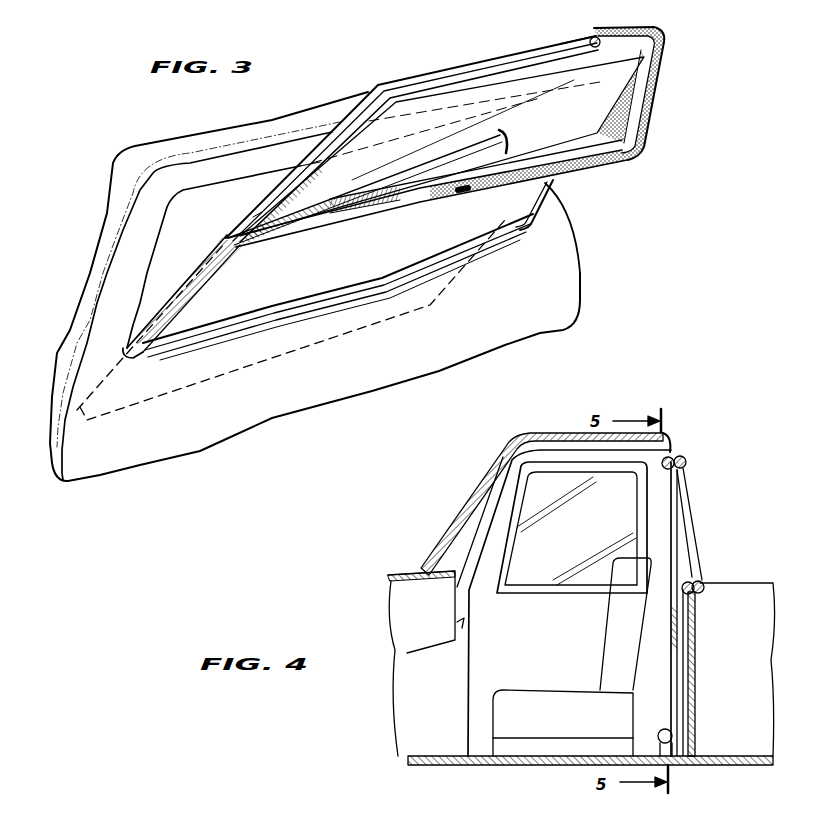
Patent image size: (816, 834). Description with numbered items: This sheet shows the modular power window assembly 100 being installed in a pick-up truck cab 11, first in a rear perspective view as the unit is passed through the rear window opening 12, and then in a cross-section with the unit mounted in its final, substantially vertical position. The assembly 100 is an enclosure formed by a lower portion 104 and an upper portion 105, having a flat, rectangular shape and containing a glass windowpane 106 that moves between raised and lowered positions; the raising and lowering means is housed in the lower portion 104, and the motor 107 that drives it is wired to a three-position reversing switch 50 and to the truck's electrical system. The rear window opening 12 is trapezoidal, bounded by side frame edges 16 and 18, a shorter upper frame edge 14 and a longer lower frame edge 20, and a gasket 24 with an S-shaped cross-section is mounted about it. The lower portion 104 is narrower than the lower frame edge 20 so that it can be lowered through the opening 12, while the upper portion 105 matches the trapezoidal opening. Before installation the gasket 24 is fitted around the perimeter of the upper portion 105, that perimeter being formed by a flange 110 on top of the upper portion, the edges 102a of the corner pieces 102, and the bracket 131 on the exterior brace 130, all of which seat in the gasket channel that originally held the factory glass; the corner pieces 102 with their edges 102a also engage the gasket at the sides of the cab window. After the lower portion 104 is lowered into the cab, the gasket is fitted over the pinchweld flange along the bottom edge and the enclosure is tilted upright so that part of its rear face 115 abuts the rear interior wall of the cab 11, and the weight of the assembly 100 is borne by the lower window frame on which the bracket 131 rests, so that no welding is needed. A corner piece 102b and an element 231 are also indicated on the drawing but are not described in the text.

In FIG. 3, the truck cab 11 is at (163, 147).
In FIG. 4, the truck cab 11 is at (543, 433).
In FIG. 3, the rear window opening 12 is at (183, 247).
In FIG. 3, the upper frame edge 14 is at (258, 182).
In FIG. 3, the side frame edge 16 is at (143, 305).
In FIG. 3, the side frame edge 18 is at (544, 212).
In FIG. 3, the lower frame edge 20 is at (413, 267).
In FIG. 3, the gasket 24 is at (607, 160).
In FIG. 4, the gasket 24 is at (680, 458).
In FIG. 4, the reversing switch 50 is at (457, 626).
In FIG. 4, the modular power window assembly 100 is at (652, 600).
In FIG. 3, the corner piece 102 is at (627, 127).
In FIG. 3, the edge of corner piece 102a is at (253, 217).
In FIG. 3, the seal flange 102b is at (641, 110).
In FIG. 3, the lower portion 104 is at (304, 280).
In FIG. 4, the lower portion 104 is at (668, 679).
In FIG. 3, the upper portion 105 is at (484, 52).
In FIG. 4, the upper portion 105 is at (674, 520).
In FIG. 3, the glass windowpane 106 is at (624, 75).
In FIG. 4, the motor 107 is at (657, 733).
In FIG. 3, the flange 110 is at (560, 42).
In FIG. 4, the rear face 115 is at (683, 703).
In FIG. 3, the exterior brace 130 is at (432, 185).
In FIG. 3, the bracket 131 is at (373, 207).
In FIG. 3, the lowered glass outline 231 is at (240, 298).